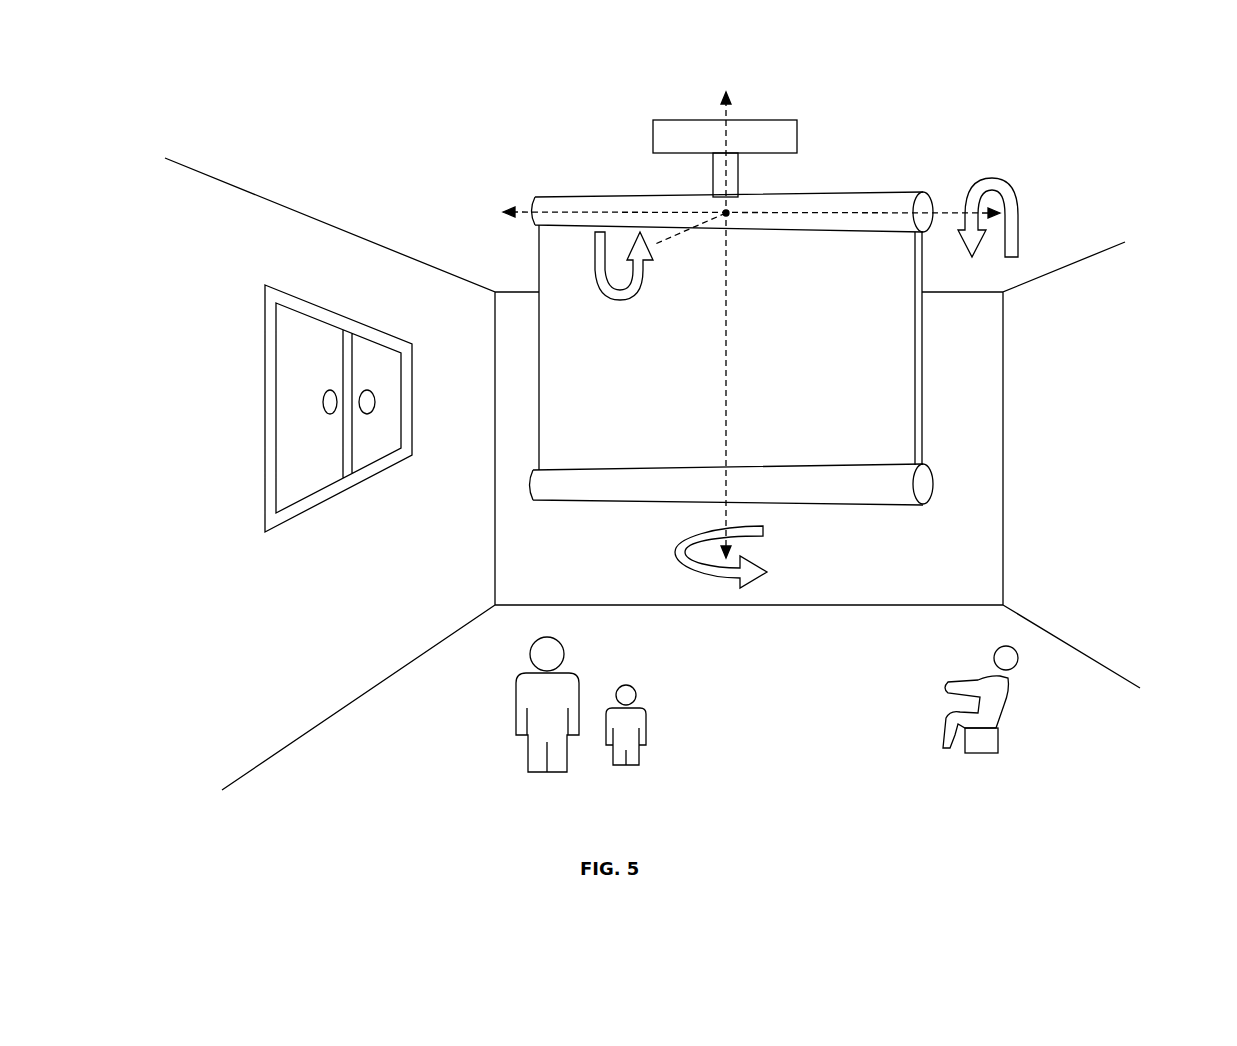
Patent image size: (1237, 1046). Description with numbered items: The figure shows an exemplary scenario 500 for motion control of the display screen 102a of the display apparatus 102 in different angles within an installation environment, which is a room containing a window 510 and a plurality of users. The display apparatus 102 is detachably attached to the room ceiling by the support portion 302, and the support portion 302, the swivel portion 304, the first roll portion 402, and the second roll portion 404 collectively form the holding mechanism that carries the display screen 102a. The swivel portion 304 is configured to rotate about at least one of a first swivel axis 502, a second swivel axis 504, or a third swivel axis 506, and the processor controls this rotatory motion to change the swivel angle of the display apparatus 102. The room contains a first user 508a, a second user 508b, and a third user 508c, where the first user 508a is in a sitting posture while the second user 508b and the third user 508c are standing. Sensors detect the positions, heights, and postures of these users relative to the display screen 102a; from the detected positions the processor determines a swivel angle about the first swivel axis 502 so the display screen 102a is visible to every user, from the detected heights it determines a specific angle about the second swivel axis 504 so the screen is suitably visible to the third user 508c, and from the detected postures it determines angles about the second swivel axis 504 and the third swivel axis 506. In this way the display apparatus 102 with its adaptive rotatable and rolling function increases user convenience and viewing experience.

The exemplary scenario 500 is at (1116, 64).
The display apparatus 102 is at (580, 196).
The display screen 102a is at (913, 398).
The support portion 302 is at (797, 140).
The swivel portion 304 is at (712, 177).
The first roll portion 402 is at (925, 193).
The second roll portion 404 is at (933, 482).
The first swivel axis 502 is at (728, 107).
The second swivel axis 504 is at (523, 207).
The third swivel axis 506 is at (622, 262).
The first user 508a is at (997, 648).
The second user 508b is at (518, 682).
The third user 508c is at (643, 710).
The window 510 is at (265, 373).